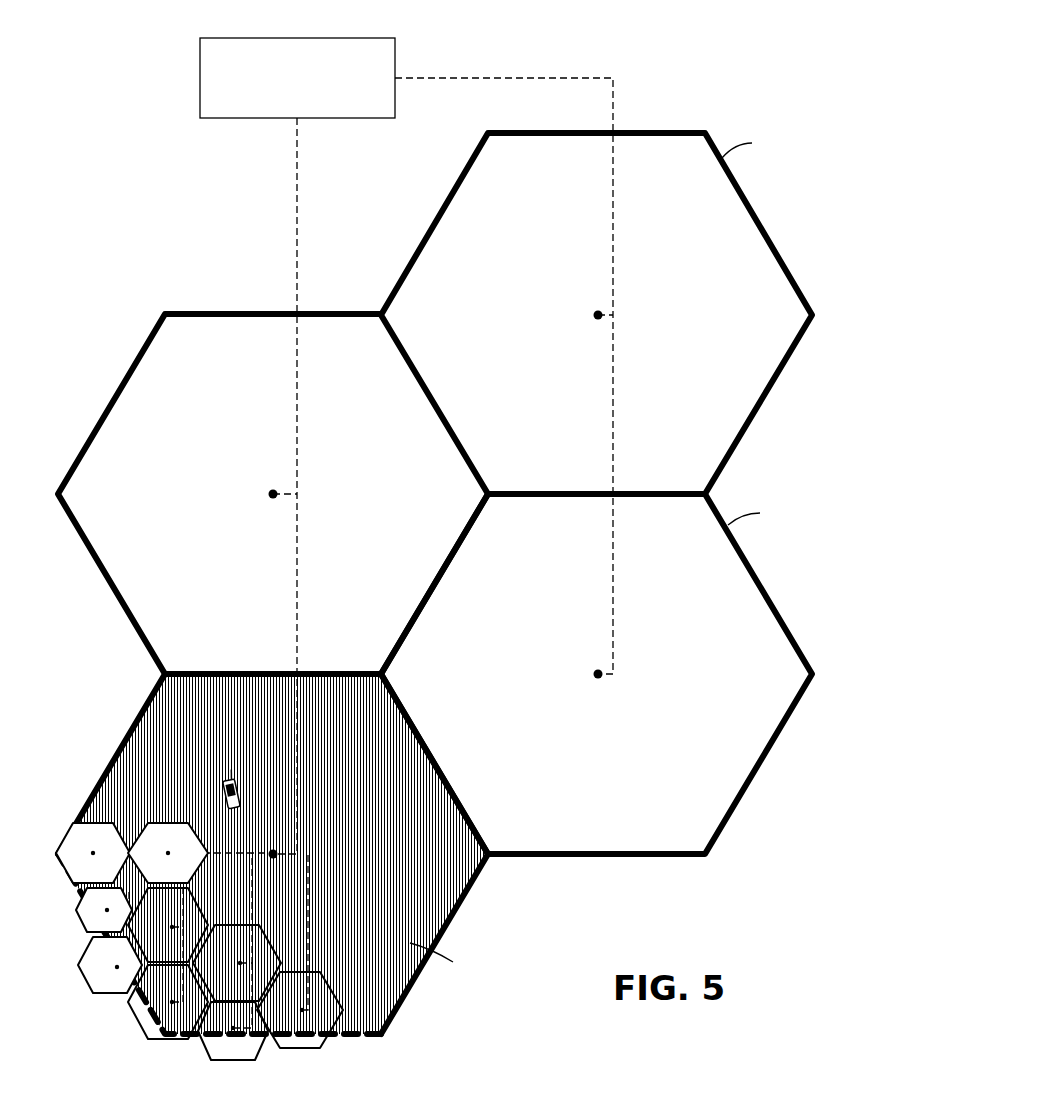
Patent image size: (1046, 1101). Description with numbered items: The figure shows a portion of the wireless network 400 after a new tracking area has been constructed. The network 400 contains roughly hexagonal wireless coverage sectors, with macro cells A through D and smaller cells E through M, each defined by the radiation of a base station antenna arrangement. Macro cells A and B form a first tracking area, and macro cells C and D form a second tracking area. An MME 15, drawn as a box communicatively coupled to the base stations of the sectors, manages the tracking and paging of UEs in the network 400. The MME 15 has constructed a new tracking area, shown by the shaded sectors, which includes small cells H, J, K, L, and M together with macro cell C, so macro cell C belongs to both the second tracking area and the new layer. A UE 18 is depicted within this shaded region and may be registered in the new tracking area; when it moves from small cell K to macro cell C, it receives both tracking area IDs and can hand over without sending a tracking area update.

The MME 15 is at (360, 38).
The UE 18 is at (238, 792).
The wireless network 400 is at (762, 48).